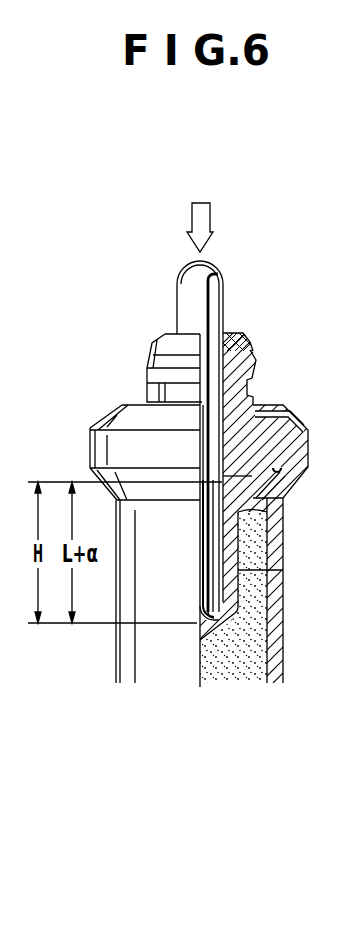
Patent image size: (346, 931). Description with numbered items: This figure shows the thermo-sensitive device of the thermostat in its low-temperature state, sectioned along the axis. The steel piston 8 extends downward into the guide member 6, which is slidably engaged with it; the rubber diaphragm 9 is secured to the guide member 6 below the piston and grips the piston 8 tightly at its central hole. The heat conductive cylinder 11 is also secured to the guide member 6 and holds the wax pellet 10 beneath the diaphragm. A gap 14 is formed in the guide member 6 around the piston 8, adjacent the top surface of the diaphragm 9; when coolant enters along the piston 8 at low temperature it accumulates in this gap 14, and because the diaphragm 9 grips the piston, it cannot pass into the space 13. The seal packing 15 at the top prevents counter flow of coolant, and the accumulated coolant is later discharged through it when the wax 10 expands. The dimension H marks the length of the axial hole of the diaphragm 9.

The guide member 6 is at (242, 440).
The steel piston 8 is at (188, 303).
The rubber diaphragm 9 is at (283, 570).
The wax pellet 10 is at (223, 655).
The heat conductive cylinder 11 is at (145, 587).
The space 13 is at (202, 615).
The gap 14 is at (268, 498).
The seal packing 15 is at (240, 336).